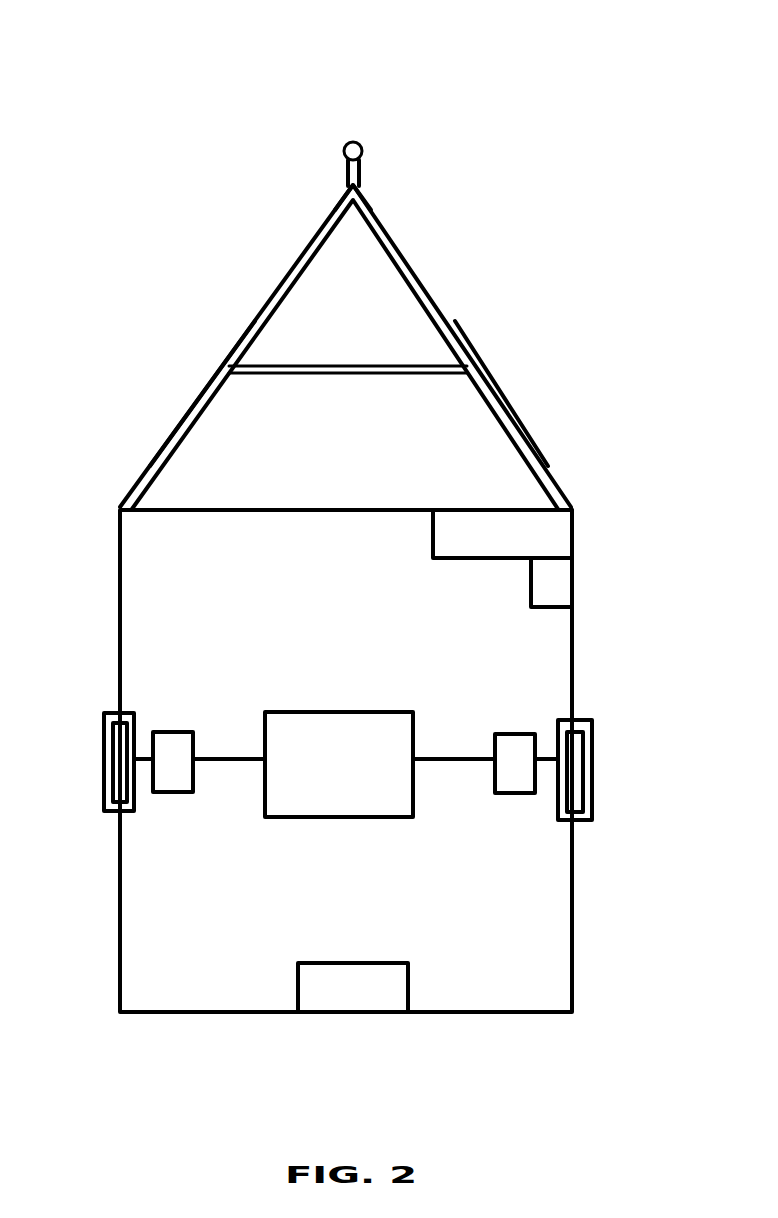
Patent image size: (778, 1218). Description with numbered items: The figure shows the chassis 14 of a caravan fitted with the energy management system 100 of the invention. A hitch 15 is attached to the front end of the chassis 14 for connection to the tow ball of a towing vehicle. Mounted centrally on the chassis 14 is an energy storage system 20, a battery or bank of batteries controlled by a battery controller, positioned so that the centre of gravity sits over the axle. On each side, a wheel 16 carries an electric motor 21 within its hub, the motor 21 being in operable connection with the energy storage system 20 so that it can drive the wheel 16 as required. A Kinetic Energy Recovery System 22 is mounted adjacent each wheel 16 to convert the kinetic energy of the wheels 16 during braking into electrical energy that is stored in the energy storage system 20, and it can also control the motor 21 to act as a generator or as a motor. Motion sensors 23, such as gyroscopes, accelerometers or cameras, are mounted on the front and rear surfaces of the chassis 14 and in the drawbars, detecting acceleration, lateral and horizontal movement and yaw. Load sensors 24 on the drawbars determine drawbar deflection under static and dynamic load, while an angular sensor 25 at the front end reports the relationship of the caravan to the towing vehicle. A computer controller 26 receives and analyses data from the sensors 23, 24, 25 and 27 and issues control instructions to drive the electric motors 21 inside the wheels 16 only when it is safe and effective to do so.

The system 100 is at (126, 179).
The chassis 14 is at (496, 332).
The hitch 15 is at (385, 135).
The wheel 16 is at (102, 811).
The energy storage system 20 is at (346, 764).
The electric motor 21 is at (113, 758).
The Kinetic Energy Recovery System 22 is at (170, 778).
The motion sensor 23 is at (322, 161).
The load sensor 24 is at (182, 430).
The angular sensor 25 is at (367, 194).
The computer controller 26 is at (558, 533).
The sensor 27 is at (563, 587).